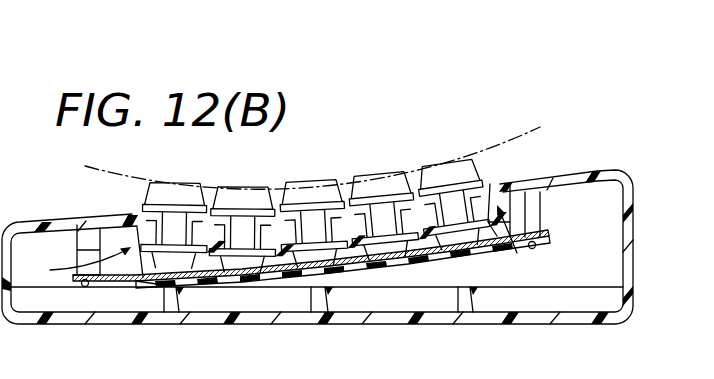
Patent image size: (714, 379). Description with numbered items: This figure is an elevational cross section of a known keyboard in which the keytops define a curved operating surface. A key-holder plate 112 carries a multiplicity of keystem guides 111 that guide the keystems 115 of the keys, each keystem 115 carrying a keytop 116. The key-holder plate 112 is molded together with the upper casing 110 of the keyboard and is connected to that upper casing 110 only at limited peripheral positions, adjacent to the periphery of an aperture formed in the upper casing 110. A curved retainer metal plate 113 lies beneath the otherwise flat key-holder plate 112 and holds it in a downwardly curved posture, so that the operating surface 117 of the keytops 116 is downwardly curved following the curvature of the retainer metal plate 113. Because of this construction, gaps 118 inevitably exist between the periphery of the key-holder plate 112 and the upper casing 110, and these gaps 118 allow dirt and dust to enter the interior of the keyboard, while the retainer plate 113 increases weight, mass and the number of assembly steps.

The upper casing 110 is at (567, 178).
The keystem guide 111 is at (281, 232).
The key-holder plate 112 is at (207, 240).
The curved retainer metal plate 113 is at (433, 283).
The keystem 115 is at (171, 253).
The keytop 116 is at (170, 191).
The operating surface 117 is at (494, 140).
The gap 118 is at (277, 246).